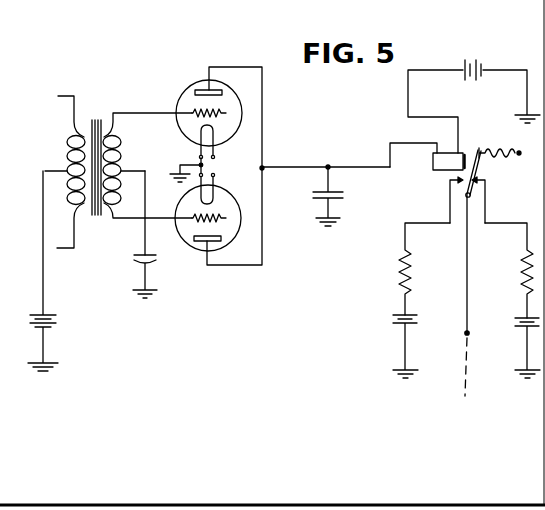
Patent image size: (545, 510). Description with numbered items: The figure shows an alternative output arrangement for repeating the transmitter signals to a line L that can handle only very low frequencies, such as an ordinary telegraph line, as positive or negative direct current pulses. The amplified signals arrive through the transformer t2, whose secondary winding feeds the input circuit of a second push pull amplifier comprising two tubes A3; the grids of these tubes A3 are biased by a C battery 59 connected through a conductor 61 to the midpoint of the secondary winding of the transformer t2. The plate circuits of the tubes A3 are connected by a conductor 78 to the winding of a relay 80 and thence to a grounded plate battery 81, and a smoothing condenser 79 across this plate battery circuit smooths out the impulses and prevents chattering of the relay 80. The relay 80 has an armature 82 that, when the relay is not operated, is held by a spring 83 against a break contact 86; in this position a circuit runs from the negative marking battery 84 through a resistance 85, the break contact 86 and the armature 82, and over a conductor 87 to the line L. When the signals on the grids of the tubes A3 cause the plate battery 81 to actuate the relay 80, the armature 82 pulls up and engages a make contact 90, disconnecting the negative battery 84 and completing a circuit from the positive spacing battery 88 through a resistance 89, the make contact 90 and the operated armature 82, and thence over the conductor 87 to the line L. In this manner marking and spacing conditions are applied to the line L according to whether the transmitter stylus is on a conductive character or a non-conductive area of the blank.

The transformer t2 is at (118, 172).
The conductor 61 is at (145, 233).
The C battery 59 is at (149, 263).
The tubes A3 is at (232, 101).
The conductor 78 is at (300, 167).
The smoothing condenser 79 is at (320, 198).
The relay 80 is at (433, 165).
The plate battery 81 is at (462, 73).
The armature 82 is at (481, 166).
The spring 83 is at (509, 147).
The negative (marking) battery 84 is at (518, 323).
The resistance 85 is at (520, 278).
The break contact 86 is at (488, 184).
The conductor 87 is at (465, 268).
The positive (spacing) battery 88 is at (396, 317).
The resistance 89 is at (399, 279).
The make contact 90 is at (450, 182).
The line L is at (465, 345).